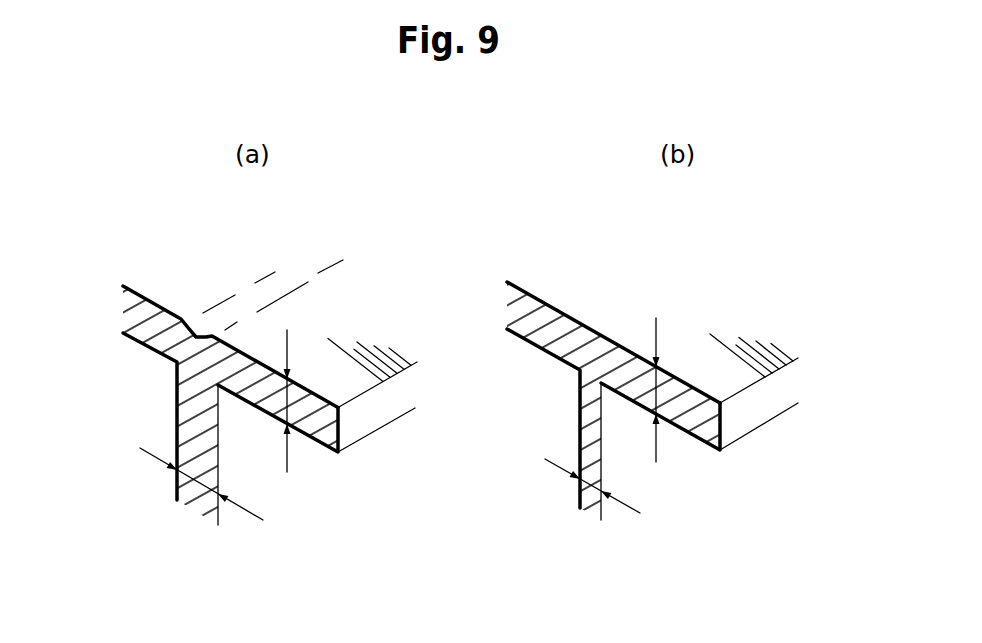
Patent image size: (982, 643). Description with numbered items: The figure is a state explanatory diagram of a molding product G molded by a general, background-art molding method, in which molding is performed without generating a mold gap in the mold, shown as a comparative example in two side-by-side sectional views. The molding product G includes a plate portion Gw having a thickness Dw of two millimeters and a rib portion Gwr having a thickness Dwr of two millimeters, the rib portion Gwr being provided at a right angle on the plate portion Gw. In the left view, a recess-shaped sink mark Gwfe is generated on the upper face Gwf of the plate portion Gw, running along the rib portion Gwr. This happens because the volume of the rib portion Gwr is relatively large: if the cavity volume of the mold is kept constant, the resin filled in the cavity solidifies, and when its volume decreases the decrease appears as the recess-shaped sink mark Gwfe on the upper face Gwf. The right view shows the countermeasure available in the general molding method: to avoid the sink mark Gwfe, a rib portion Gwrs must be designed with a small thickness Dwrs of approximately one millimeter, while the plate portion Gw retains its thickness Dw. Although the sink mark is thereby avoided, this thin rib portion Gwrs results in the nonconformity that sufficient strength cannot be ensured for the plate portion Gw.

The molding product G is at (505, 461).
The plate portion Gw is at (367, 420).
The upper face Gwf is at (460, 314).
The sink mark Gwfe is at (272, 289).
The rib portion Gwr is at (177, 410).
The rib portion Gwrs is at (578, 415).
The thickness Dw is at (473, 398).
The thickness Dwr is at (175, 477).
The thickness Dwrs is at (628, 493).